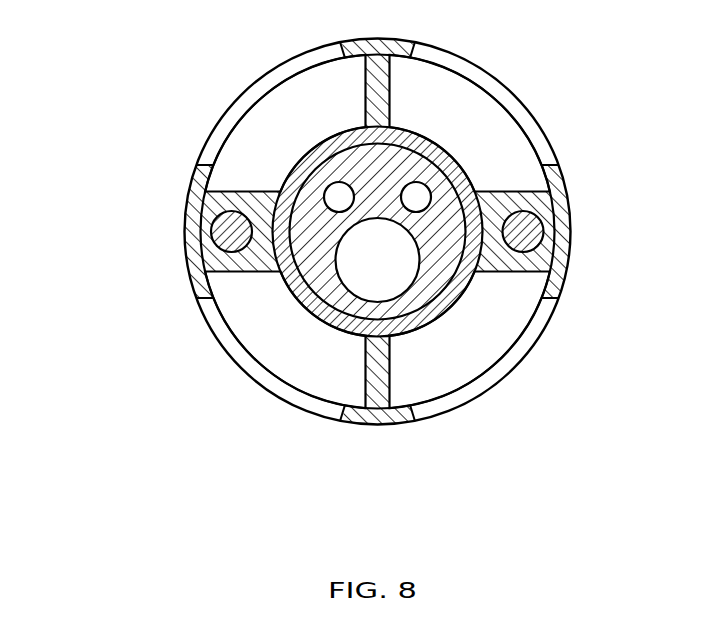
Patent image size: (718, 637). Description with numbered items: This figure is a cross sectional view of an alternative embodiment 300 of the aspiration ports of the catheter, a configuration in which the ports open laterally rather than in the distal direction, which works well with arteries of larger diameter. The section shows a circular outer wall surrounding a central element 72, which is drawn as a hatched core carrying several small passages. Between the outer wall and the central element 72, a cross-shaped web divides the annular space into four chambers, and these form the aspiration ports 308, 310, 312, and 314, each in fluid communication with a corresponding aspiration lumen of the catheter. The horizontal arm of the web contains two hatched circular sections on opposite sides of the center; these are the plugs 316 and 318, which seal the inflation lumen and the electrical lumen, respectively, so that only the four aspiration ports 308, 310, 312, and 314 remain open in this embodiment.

The cable assembly 300 is at (567, 277).
The central core bundle 72 is at (462, 208).
The aspiration port 308 is at (468, 103).
The aspiration port 310 is at (458, 360).
The aspiration port 312 is at (260, 343).
The aspiration port 314 is at (330, 88).
The plug 316 is at (545, 213).
The plug 318 is at (217, 222).